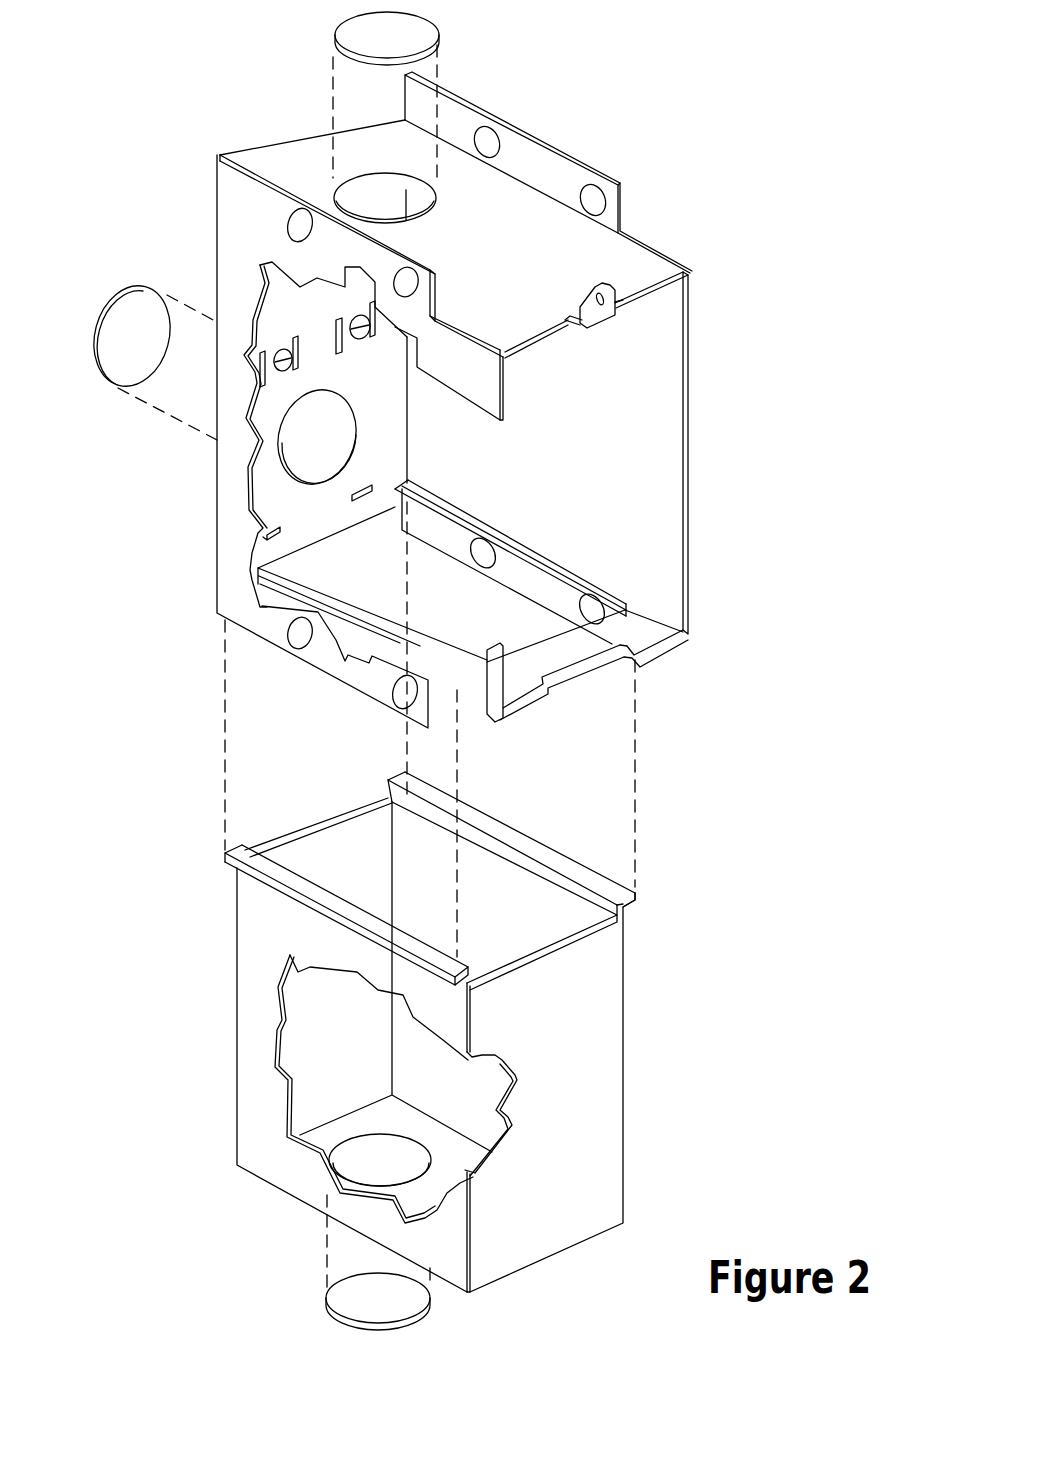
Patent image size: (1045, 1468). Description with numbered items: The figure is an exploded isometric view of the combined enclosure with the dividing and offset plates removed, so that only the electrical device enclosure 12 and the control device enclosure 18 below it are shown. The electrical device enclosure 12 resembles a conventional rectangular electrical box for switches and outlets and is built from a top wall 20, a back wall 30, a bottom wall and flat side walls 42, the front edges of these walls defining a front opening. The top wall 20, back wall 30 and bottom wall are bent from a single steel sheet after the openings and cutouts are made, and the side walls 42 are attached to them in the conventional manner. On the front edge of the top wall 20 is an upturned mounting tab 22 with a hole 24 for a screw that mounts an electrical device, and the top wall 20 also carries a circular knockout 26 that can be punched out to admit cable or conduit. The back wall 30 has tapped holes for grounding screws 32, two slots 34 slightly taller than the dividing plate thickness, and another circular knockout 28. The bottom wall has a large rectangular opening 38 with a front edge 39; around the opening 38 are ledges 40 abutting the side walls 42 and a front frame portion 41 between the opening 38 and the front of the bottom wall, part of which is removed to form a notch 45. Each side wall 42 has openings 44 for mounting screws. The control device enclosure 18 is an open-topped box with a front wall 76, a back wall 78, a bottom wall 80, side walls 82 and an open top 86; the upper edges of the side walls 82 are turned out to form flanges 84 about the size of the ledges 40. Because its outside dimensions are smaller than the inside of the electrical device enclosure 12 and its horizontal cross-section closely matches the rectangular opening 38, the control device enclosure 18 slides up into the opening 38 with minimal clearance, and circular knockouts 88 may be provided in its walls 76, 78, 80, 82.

The electrical device enclosure 12 is at (748, 421).
The control device enclosure 18 is at (700, 1030).
The top wall 20 is at (503, 207).
The mounting tab 22 is at (613, 320).
The hole 24 is at (603, 298).
The circular knockout 26 is at (438, 27).
The circular knockout 28 is at (98, 373).
The back wall 30 is at (260, 567).
The grounding screws 32 is at (278, 340).
The slots 34 is at (250, 452).
The rectangular opening 38 is at (497, 610).
The front edge 39 is at (570, 636).
The ledges 40 is at (262, 608).
The front frame portion 41 is at (520, 687).
The side walls 42 is at (232, 592).
The openings 44 is at (603, 188).
The notch 45 is at (590, 683).
The front wall 76 is at (600, 1178).
The back wall 78 is at (330, 858).
The bottom wall 80 is at (470, 1150).
The side walls 82 is at (257, 923).
The flanges 84 is at (215, 853).
The open top 86 is at (505, 890).
The circular knockouts 88 is at (322, 1300).